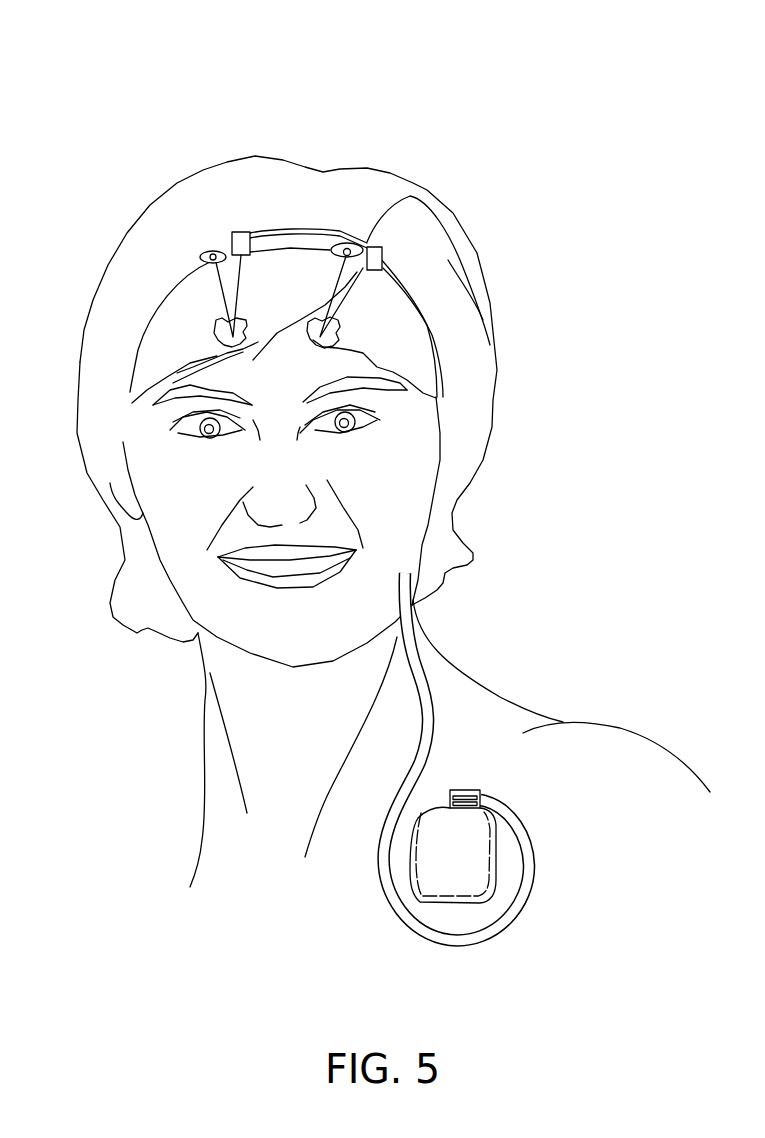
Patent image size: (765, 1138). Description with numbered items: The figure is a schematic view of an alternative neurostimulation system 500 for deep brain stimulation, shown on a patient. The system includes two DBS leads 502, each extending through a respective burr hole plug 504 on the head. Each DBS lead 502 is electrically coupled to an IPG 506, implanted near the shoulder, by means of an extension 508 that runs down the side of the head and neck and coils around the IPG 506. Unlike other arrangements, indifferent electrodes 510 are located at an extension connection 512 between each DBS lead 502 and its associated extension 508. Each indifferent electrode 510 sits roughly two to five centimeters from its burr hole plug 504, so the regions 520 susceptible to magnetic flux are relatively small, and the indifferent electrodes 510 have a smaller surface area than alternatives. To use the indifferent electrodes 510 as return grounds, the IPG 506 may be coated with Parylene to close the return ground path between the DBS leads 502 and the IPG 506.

The neurostimulation system 500 is at (470, 110).
The DBS lead 502 is at (212, 294).
The burr hole plug 504 is at (209, 255).
The IPG 506 is at (460, 833).
The extension 508 is at (479, 924).
The indifferent electrode 510 is at (232, 233).
The extension connection 512 is at (246, 215).
The region susceptible to magnetic flux 520 is at (448, 188).